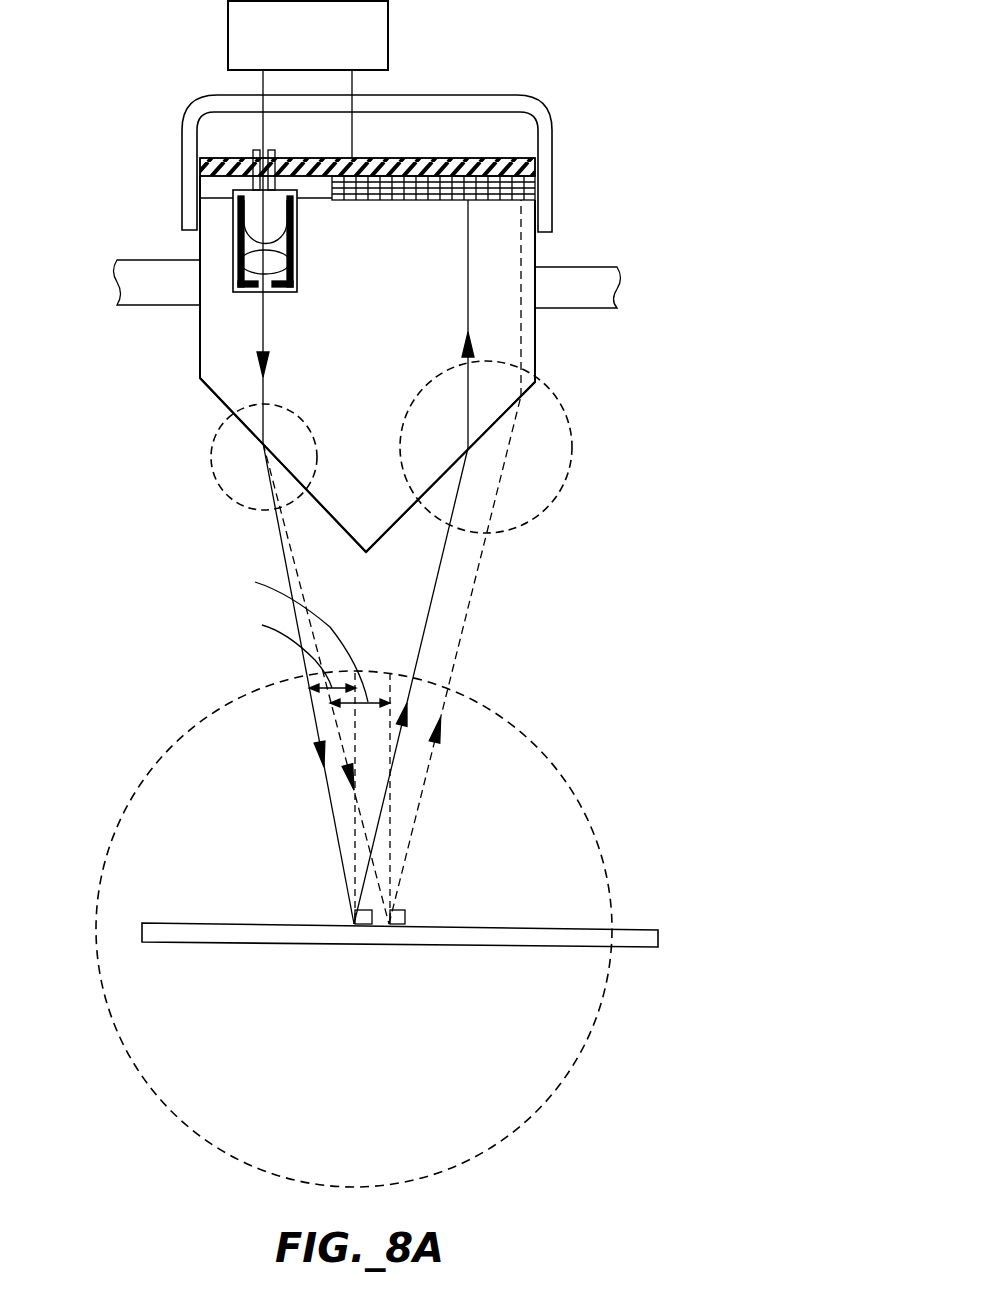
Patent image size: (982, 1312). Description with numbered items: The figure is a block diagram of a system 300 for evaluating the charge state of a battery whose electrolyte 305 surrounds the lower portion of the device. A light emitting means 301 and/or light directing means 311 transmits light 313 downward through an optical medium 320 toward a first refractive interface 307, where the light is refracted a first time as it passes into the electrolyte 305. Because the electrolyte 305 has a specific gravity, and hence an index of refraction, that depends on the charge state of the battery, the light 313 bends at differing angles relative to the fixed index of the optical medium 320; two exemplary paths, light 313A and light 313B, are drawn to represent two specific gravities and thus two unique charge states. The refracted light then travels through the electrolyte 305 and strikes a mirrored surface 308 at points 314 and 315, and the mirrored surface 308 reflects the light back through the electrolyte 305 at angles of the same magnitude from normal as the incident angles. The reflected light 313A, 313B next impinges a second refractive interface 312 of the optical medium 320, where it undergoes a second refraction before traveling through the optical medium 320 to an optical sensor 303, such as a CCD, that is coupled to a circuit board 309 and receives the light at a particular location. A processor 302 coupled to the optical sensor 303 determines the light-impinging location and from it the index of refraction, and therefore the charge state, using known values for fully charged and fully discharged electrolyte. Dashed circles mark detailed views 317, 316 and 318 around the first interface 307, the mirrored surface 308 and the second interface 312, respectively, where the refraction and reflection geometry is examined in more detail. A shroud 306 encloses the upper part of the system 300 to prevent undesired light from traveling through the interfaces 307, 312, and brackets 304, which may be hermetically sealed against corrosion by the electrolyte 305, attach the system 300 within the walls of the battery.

The system 300 is at (176, 66).
The light emitting means 301 is at (290, 258).
The processor 302 is at (327, 57).
The optical sensor 303 is at (537, 192).
The brackets 304 is at (148, 260).
The electrolyte 305 is at (77, 604).
The shroud 306 is at (182, 180).
The refractive interface 307 is at (207, 388).
The mirrored surface 308 is at (545, 945).
The circuit board 309 is at (397, 160).
The light directing means 311 is at (233, 290).
The refractive interface 312 is at (493, 423).
The light 313 is at (258, 323).
The light 313A is at (427, 613).
The light 313B is at (475, 580).
The point 314 is at (352, 923).
The point 315 is at (403, 923).
The detailed view 316 is at (588, 1033).
The detailed view 317 is at (216, 479).
The detailed view 318 is at (571, 430).
The optical medium 320 is at (380, 366).